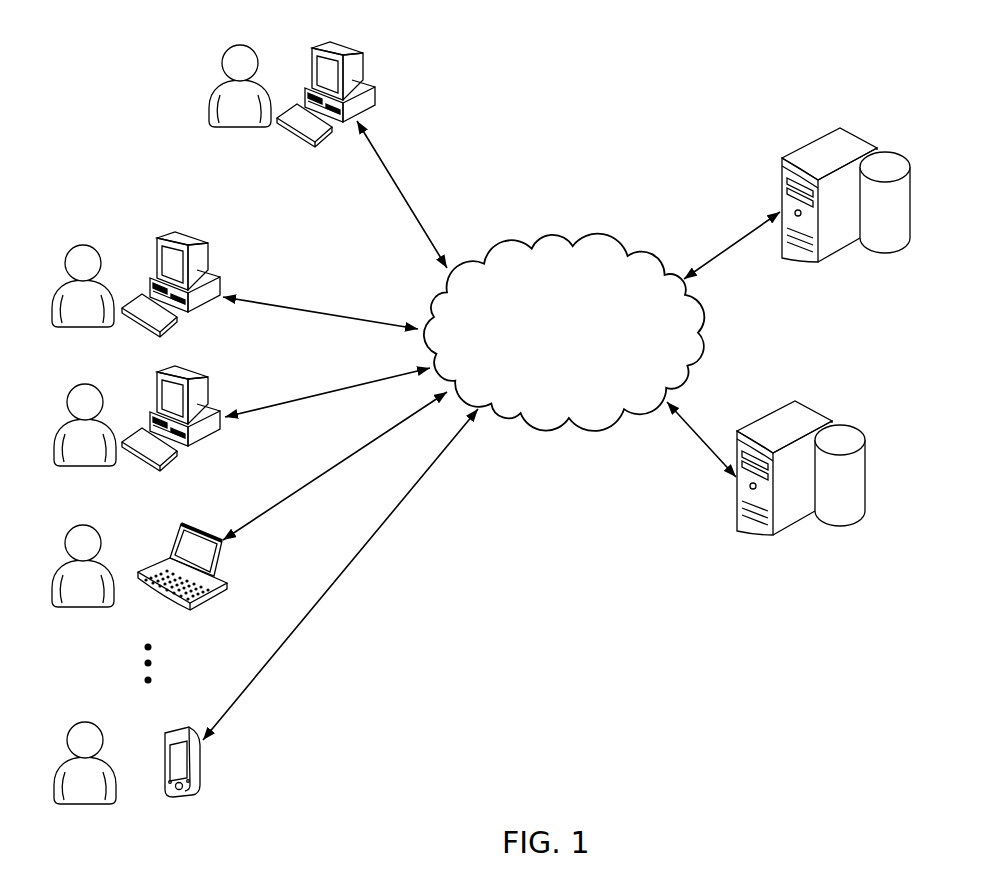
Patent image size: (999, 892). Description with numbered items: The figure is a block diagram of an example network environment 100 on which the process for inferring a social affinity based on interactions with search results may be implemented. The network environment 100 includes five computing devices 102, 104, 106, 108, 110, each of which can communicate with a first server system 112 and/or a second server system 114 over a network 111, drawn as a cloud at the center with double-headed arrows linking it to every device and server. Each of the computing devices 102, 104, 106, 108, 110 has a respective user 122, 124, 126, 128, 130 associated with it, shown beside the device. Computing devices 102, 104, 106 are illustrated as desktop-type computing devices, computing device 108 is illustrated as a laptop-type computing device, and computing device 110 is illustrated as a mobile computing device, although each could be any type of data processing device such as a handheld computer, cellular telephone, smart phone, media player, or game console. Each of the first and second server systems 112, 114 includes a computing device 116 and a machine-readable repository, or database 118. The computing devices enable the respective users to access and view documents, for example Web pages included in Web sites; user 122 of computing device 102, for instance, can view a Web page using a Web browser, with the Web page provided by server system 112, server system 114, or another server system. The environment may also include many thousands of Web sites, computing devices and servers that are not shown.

The network environment 100 is at (672, 106).
The computing device 102 is at (328, 47).
The computing device 104 is at (175, 239).
The computing device 106 is at (175, 373).
The laptop-type computing device 108 is at (182, 523).
The mobile computing device 110 is at (164, 730).
The network 111 is at (577, 234).
The first server system 112 is at (790, 268).
The second server system 114 is at (744, 540).
The computing device 116 is at (872, 146).
The database 118 is at (912, 202).
The user 122 is at (218, 82).
The user 124 is at (90, 243).
The user 126 is at (95, 382).
The user 128 is at (97, 530).
The user 130 is at (98, 727).